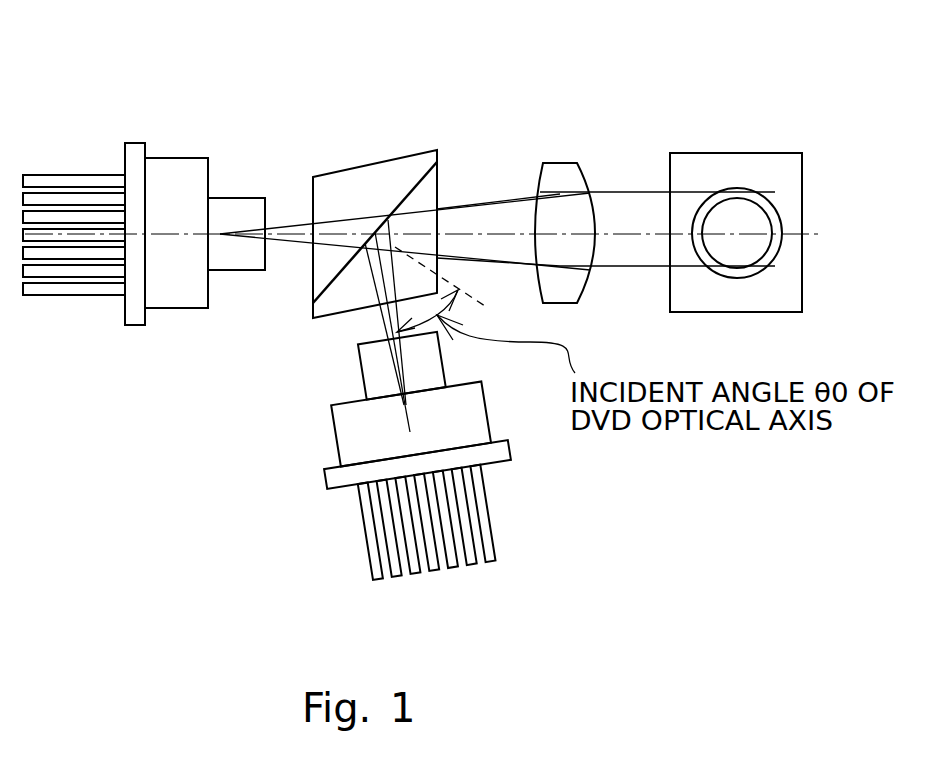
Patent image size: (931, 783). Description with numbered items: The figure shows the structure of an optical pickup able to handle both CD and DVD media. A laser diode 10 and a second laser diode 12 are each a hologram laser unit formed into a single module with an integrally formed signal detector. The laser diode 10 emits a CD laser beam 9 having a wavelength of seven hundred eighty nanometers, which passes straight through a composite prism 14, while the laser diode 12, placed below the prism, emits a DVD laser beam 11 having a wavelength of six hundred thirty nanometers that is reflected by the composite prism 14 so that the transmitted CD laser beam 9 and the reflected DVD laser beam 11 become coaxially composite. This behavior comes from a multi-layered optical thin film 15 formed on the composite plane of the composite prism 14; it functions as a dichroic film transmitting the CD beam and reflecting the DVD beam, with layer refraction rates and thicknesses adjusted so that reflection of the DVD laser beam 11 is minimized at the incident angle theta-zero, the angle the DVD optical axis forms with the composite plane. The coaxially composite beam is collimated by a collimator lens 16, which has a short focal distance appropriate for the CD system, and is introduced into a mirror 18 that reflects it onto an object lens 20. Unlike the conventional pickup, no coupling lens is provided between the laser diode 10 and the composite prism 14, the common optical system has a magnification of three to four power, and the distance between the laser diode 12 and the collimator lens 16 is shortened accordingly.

The CD laser beam 9 is at (280, 228).
The laser diode 10 is at (135, 143).
The DVD laser beam 11 is at (382, 321).
The laser diode 12 is at (333, 424).
The composite prism 14 is at (410, 155).
The multi-layered optical thin film 15 is at (423, 181).
The collimator lens 16 is at (560, 163).
The mirror 18 is at (803, 177).
The object lens 20 is at (773, 263).